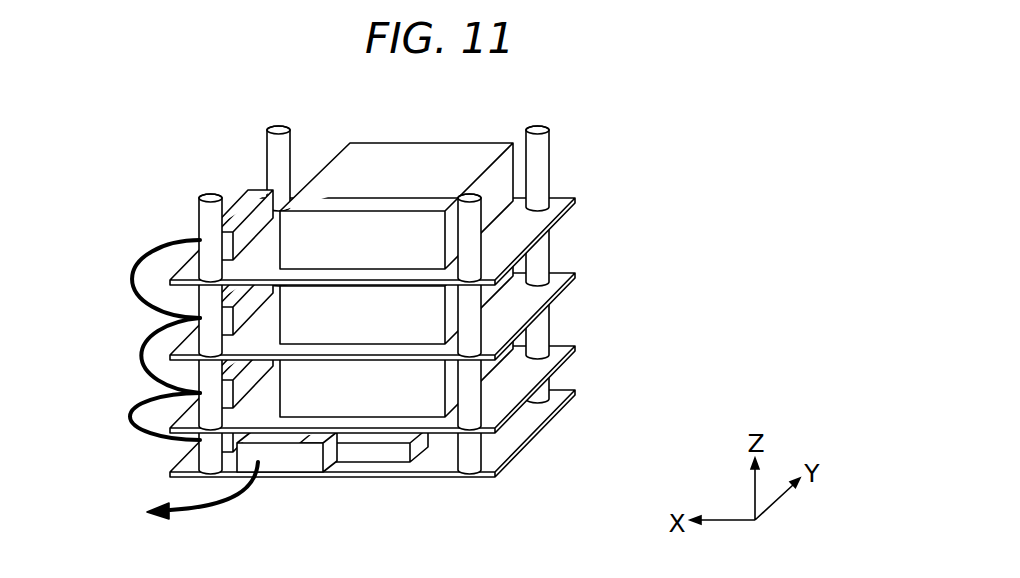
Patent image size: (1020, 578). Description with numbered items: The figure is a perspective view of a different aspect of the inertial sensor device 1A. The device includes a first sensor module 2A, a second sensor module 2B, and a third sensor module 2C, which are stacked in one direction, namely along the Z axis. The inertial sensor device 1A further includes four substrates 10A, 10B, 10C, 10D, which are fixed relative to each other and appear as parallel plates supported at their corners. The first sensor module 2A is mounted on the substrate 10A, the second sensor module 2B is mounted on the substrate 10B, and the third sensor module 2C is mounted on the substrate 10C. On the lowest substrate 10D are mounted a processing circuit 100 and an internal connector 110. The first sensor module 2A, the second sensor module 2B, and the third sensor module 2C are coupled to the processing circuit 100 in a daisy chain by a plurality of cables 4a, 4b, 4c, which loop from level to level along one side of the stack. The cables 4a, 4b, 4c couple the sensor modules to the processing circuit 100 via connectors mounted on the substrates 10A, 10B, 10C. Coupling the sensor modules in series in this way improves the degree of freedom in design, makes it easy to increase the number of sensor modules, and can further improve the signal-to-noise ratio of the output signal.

The inertial sensor device 1A is at (370, 306).
The first sensor module 2A is at (512, 343).
The second sensor module 2B is at (513, 270).
The third sensor module 2C is at (498, 183).
The substrate 10A is at (520, 369).
The substrate 10B is at (520, 294).
The substrate 10C is at (518, 224).
The substrate 10D is at (520, 423).
The cable 4a is at (130, 410).
The cable 4b is at (130, 345).
The cable 4c is at (133, 265).
The processing circuit 100 is at (380, 452).
The internal connector 110 is at (292, 460).